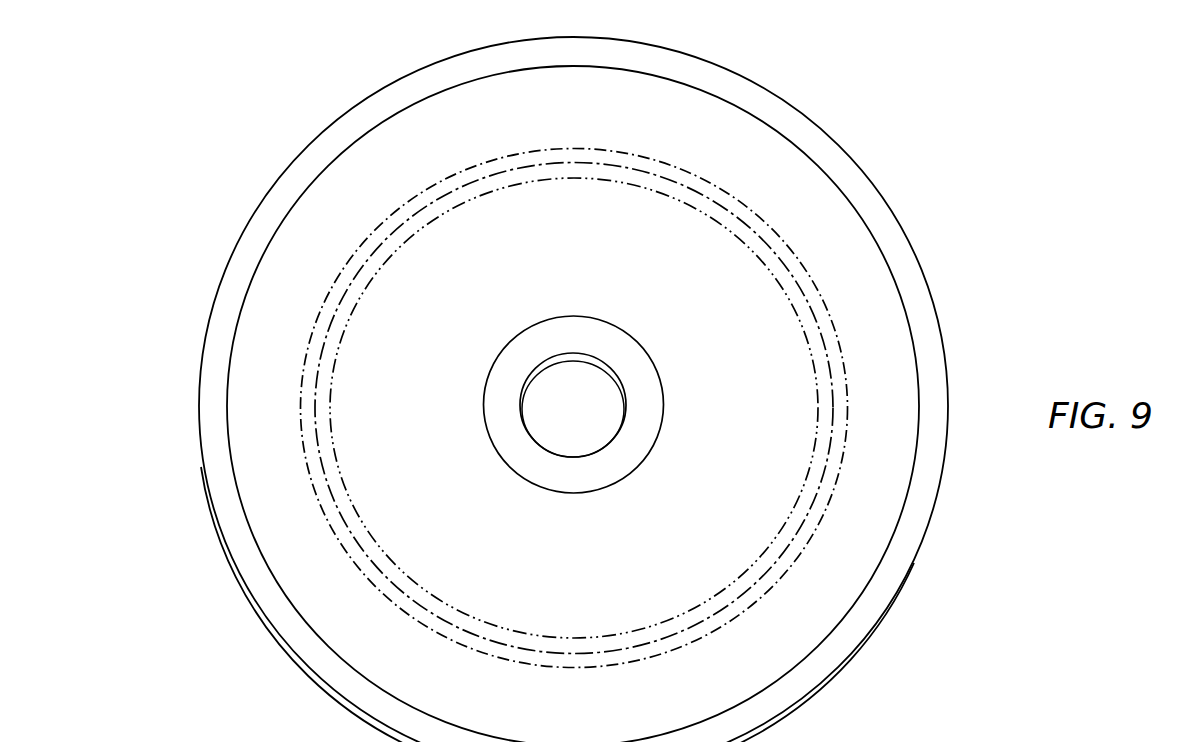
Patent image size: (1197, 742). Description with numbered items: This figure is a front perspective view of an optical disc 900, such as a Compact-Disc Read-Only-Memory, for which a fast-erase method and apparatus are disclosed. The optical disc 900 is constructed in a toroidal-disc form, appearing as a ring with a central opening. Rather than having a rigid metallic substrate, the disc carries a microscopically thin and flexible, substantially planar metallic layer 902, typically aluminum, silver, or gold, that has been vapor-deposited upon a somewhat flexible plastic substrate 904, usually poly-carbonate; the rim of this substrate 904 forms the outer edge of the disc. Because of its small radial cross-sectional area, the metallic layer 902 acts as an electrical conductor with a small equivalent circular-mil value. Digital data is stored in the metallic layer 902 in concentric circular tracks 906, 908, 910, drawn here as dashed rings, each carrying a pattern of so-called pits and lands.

The optical disc 900 is at (920, 126).
The metallic layer 902 is at (265, 347).
The substrate 904 is at (203, 467).
The data track 906 is at (322, 308).
The data track 908 is at (342, 295).
The data track 910 is at (370, 278).